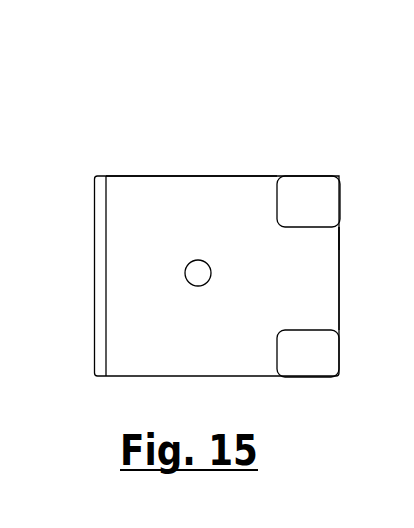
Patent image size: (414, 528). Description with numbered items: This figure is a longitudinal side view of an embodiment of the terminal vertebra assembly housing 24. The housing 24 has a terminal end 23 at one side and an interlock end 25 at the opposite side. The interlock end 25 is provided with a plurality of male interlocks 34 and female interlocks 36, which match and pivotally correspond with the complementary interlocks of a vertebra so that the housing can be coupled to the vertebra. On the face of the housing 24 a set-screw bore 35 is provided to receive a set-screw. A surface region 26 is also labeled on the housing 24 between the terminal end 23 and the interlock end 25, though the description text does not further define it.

The terminal end 23 is at (93, 217).
The terminal vertebra assembly housing 24 is at (180, 115).
The interlock end 25 is at (343, 197).
The top surface 26 is at (193, 197).
The male interlock 34 is at (317, 287).
The set-screw bore 35 is at (203, 262).
The female interlock 36 is at (288, 193).